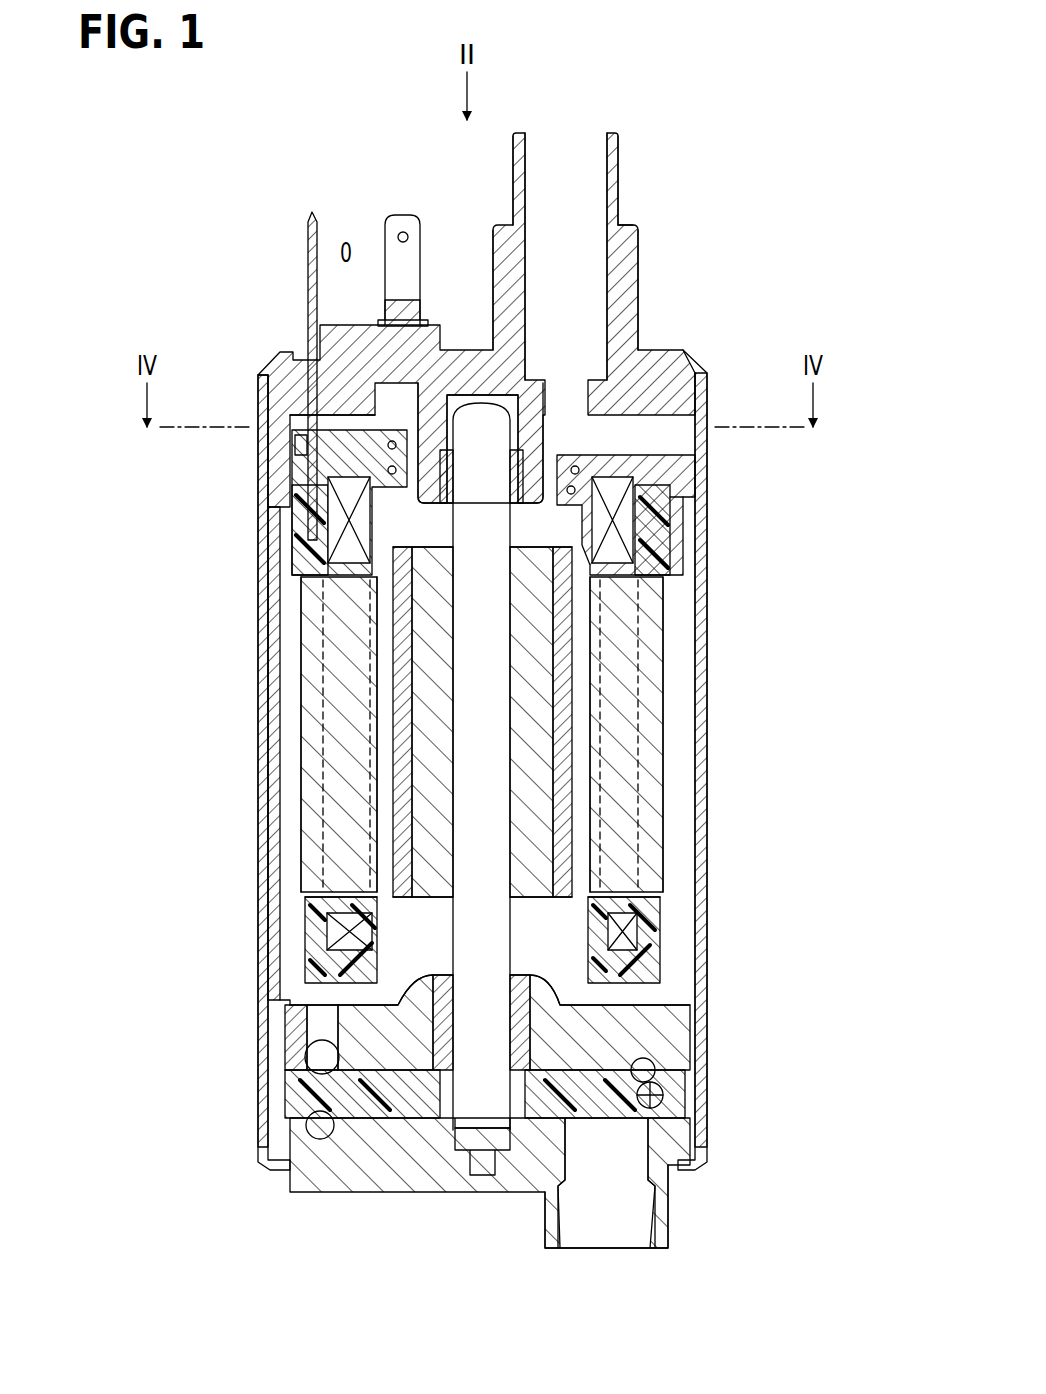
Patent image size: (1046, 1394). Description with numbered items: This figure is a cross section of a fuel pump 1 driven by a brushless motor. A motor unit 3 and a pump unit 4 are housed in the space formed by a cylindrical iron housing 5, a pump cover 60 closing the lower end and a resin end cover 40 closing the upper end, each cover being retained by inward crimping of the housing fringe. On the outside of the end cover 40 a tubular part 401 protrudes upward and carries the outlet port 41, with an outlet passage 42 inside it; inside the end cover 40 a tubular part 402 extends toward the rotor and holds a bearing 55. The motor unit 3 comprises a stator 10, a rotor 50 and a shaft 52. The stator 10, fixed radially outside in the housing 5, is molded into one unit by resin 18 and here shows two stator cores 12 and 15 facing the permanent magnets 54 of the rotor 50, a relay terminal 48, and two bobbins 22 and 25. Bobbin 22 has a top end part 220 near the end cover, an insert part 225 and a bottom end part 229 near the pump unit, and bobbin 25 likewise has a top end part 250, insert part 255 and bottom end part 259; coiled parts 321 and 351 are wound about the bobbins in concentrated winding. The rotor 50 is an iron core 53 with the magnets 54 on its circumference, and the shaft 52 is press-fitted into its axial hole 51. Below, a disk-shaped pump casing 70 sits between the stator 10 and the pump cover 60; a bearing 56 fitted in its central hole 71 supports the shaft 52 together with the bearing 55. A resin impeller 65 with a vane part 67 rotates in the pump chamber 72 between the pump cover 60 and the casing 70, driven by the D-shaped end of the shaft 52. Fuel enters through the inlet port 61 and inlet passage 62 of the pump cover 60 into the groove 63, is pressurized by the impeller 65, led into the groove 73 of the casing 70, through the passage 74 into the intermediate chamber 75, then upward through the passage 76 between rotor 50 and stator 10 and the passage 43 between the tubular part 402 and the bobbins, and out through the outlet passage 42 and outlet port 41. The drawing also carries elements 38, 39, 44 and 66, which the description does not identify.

The fuel pump 1 is at (237, 143).
The motor unit 3 is at (175, 648).
The pump unit 4 is at (212, 1143).
The housing 5 is at (270, 885).
The stator 10 is at (670, 650).
The stator core 12 is at (320, 675).
The stator core 15 is at (645, 735).
The resin 18 is at (660, 470).
The coil bobbin 22 is at (293, 533).
The coil bobbin 25 is at (680, 510).
The terminal 38 is at (306, 222).
The terminal 39 is at (395, 222).
The end cover 40 is at (355, 378).
The outlet port 41 is at (583, 132).
The outlet passage 42 is at (575, 292).
The passage 43 is at (548, 440).
The stator yoke 44 is at (292, 620).
The relay terminal 48 is at (294, 445).
The rotor 50 is at (392, 745).
The axial hole 51 is at (470, 785).
The shaft 52 is at (470, 830).
The iron core 53 is at (535, 815).
The permanent magnets 54 is at (560, 870).
The bearing 55 is at (365, 535).
The bearing 56 is at (530, 1030).
The pump cover 60 is at (363, 1185).
The inlet port 61 is at (602, 1250).
The inlet passage 62 is at (640, 1167).
The groove 63 is at (320, 1135).
The impeller 65 is at (660, 1100).
The lower bush 66 is at (490, 1110).
The vane part 67 is at (655, 1068).
The pump casing 70 is at (400, 1080).
The hole 71 is at (395, 992).
The pump chamber 72 is at (300, 1108).
The groove 73 is at (318, 1058).
The passage 74 is at (320, 1025).
The intermediate chamber 75 is at (620, 990).
The passage 76 is at (575, 680).
The top end part 220 is at (290, 500).
The insert part 225 is at (320, 650).
The bottom end part 229 is at (320, 915).
The top end part 250 is at (650, 540).
The insert part 255 is at (625, 765).
The bottom end part 259 is at (640, 915).
The coiled part 321 is at (330, 930).
The coiled part 351 is at (635, 930).
The tubular part 401 is at (627, 243).
The tubular part 402 is at (375, 398).